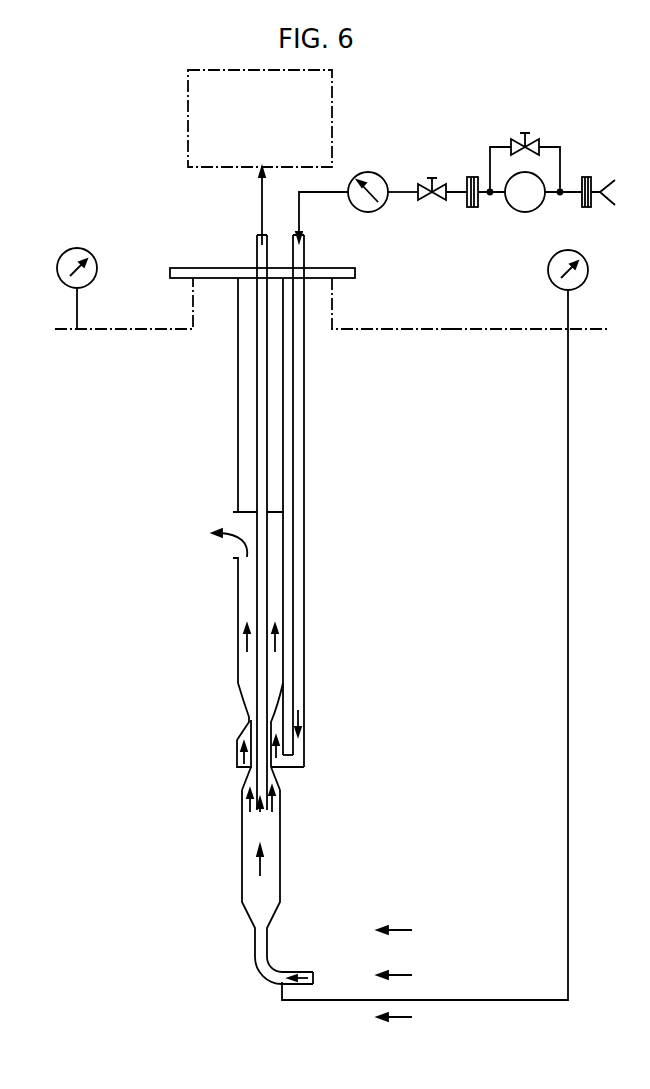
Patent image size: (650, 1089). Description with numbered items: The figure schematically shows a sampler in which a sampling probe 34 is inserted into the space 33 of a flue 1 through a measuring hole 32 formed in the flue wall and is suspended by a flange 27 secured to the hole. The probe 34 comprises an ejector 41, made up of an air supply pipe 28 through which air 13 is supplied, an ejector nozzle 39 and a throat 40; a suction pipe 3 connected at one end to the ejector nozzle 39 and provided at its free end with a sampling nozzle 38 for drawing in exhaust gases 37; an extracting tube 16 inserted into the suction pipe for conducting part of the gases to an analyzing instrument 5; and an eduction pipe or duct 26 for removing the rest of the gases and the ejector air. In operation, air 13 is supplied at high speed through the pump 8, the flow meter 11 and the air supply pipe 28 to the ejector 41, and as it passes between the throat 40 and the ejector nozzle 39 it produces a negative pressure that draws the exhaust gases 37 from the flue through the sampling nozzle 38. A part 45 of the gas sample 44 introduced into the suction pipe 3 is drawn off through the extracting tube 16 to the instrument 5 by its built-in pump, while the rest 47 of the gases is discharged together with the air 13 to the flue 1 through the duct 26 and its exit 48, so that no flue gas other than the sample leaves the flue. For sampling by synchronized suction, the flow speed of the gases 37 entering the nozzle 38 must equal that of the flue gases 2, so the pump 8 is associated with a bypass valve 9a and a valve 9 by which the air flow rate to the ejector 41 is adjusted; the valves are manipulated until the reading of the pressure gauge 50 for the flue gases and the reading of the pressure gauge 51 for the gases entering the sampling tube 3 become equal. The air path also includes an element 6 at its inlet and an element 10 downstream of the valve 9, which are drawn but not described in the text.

The flue 1 is at (148, 322).
The flue gases 2 is at (395, 928).
The suction pipe 3 is at (241, 874).
The analyzing instrument 5 is at (188, 100).
The air inlet filter 6 is at (587, 176).
The pump 8 is at (539, 209).
The valve 9 is at (434, 175).
The bypass valve 9a is at (535, 138).
The filter 10 is at (468, 208).
The flow meter 11 is at (362, 172).
The air 13 is at (300, 205).
The extracting tube 16 is at (243, 681).
The eduction pipe or duct 26 is at (237, 613).
The flange 27 is at (217, 268).
The air supply pipe 28 is at (304, 613).
The measuring hole 32 is at (338, 318).
The space 33 is at (452, 350).
The sampling probe 34 is at (231, 424).
The exhaust gases 37 is at (313, 972).
The sampling nozzle 38 is at (283, 968).
The ejector nozzle 39 is at (272, 742).
The throat 40 is at (284, 698).
The ejector 41 is at (250, 744).
The gas sample 44 is at (262, 865).
The part of the gas sample 45 is at (262, 817).
The rest of the gases 47 is at (247, 808).
The exit 48 is at (233, 538).
The pressure gauge 50 is at (97, 268).
The pressure gauge 51 is at (586, 261).